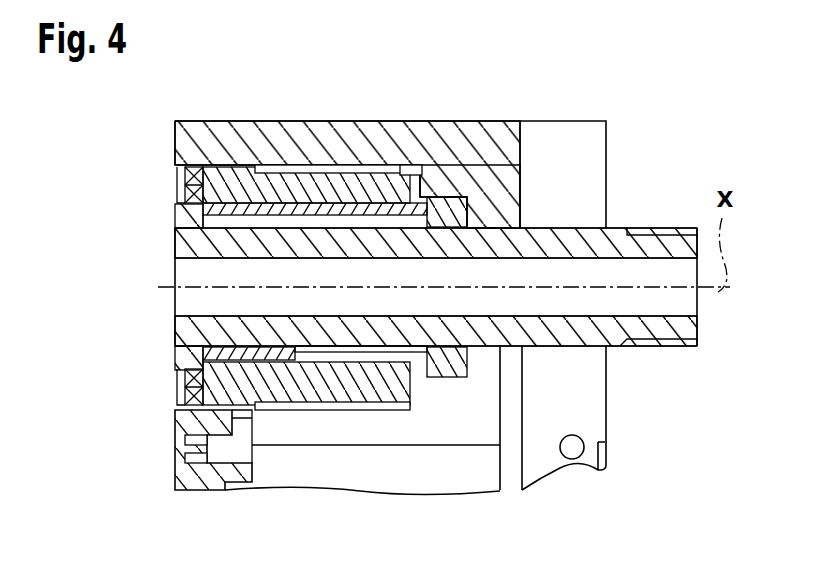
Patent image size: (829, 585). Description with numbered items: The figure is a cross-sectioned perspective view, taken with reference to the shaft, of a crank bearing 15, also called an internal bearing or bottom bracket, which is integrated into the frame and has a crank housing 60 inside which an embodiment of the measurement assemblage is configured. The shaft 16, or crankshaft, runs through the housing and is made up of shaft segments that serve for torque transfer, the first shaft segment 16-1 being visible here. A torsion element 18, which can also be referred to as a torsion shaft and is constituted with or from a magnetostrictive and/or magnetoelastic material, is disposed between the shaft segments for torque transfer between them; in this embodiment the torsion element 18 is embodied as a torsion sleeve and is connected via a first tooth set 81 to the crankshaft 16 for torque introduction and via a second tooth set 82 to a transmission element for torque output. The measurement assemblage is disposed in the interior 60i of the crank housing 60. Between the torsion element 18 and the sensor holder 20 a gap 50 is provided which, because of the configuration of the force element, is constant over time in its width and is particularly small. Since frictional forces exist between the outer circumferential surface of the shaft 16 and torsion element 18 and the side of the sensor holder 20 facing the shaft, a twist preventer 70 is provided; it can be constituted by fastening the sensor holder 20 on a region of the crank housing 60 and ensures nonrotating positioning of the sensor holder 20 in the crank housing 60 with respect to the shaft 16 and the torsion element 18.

The crank bearing 15 is at (371, 98).
The shaft 16 is at (235, 330).
The first shaft segment 16-1 is at (162, 284).
The torsion element 18 is at (402, 410).
The sensor holder 20 is at (411, 168).
The gap 50 is at (203, 185).
The crank housing 60 is at (248, 137).
The interior 60i is at (466, 150).
The twist preventer 70 is at (257, 458).
The first tooth set 81 is at (444, 378).
The second tooth set 82 is at (186, 376).